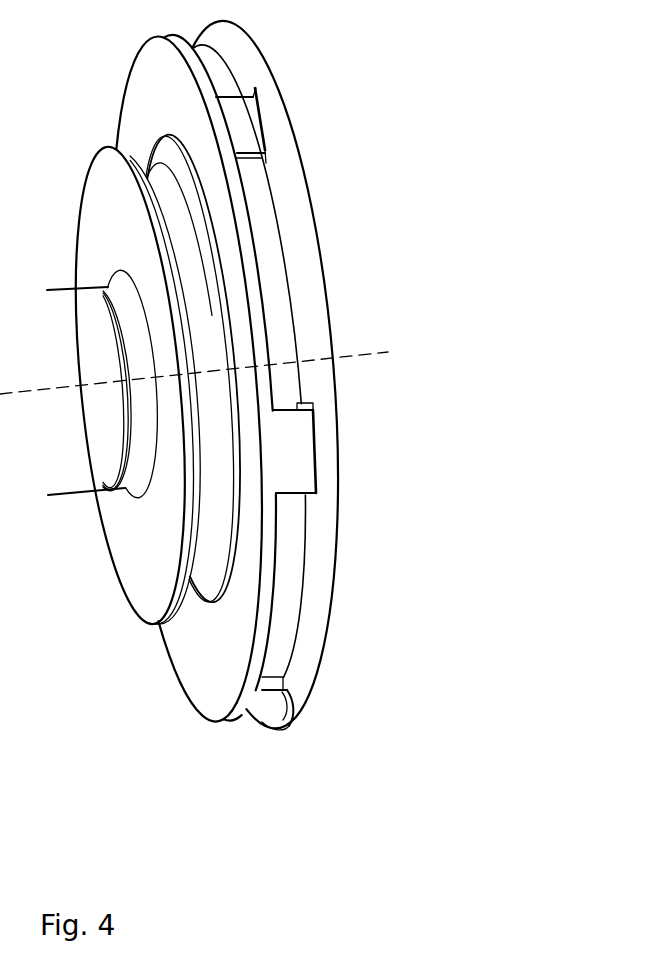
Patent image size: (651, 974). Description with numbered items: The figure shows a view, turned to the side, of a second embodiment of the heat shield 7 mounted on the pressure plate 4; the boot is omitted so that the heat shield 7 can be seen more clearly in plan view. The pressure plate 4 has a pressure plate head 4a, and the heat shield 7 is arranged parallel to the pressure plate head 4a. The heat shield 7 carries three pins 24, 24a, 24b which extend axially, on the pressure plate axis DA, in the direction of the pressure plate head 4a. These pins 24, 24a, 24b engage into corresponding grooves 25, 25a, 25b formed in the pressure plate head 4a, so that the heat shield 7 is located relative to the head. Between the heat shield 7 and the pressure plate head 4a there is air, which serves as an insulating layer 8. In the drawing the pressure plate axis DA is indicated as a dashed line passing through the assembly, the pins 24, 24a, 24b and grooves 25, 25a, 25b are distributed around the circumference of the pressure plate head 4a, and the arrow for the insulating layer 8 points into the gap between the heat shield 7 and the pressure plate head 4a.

The pressure plate 4 is at (149, 685).
The pressure plate head 4a is at (320, 227).
The heat shield 7 is at (275, 612).
The insulating layer 8 is at (289, 540).
The pin 24 is at (268, 137).
The groove 25 is at (258, 84).
The pin 24a is at (295, 488).
The groove 25a is at (313, 403).
The pin 24b is at (282, 721).
The groove 25b is at (293, 691).
The pressure plate axis DA is at (384, 354).